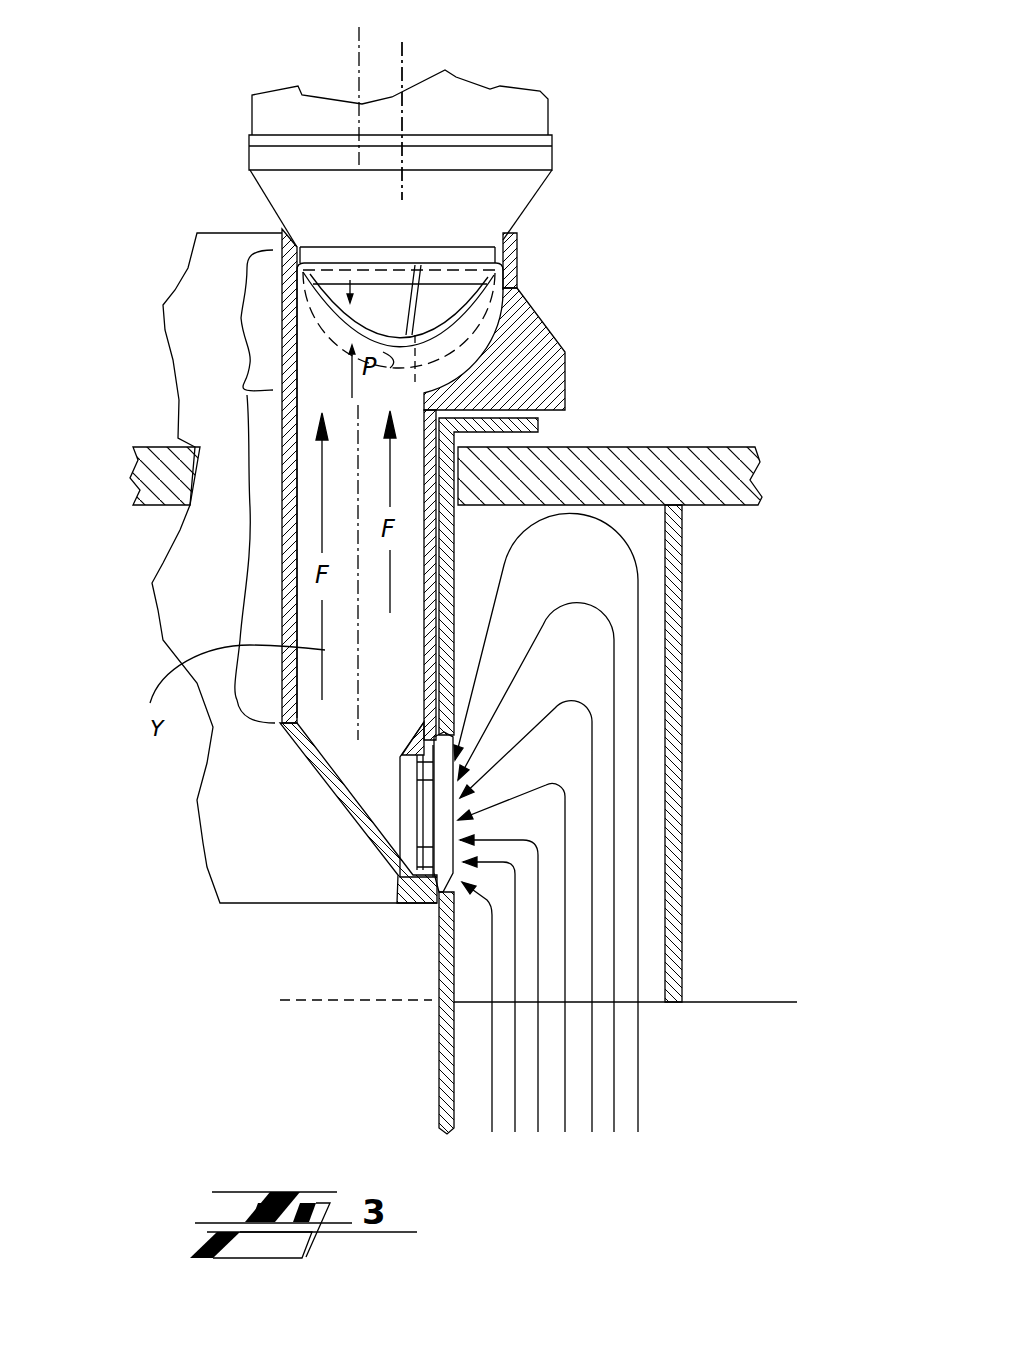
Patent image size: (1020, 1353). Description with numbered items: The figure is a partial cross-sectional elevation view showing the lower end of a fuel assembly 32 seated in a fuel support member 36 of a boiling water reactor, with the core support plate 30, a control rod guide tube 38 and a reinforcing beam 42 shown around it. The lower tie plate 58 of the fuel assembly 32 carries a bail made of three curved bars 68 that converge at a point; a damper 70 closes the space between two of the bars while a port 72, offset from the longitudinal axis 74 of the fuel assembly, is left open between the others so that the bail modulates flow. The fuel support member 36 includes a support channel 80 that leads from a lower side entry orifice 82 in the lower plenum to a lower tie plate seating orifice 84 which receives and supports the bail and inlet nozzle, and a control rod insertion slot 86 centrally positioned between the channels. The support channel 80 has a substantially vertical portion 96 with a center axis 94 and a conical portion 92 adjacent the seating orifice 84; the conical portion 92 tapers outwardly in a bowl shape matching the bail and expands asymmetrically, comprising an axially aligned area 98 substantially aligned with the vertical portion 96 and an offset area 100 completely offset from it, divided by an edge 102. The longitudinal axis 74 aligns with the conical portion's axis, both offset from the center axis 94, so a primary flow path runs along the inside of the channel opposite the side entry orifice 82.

The core support plate 30 is at (725, 505).
The fuel assembly 32 is at (590, 113).
The fuel support member 36 is at (563, 380).
The control rod guide tube 38 is at (439, 932).
The reinforcing beam 42 is at (700, 877).
The lower tie plate 58 is at (525, 217).
The curved bar 68 is at (408, 300).
The damper 70 is at (350, 288).
The port 72 is at (283, 500).
The longitudinal axis 74 is at (403, 54).
The support channel 80 is at (340, 737).
The lower side entry orifice 82 is at (420, 806).
The lower tie plate seating orifice 84 is at (500, 243).
The control rod insertion slot 86 is at (210, 273).
The conical portion 92 is at (231, 320).
The center axis of the substantially vertical portion 94 is at (360, 47).
The substantially vertical portion 96 is at (231, 615).
The axially aligned area 98 is at (300, 408).
The offset area 100 is at (516, 320).
The edge 102 is at (423, 396).